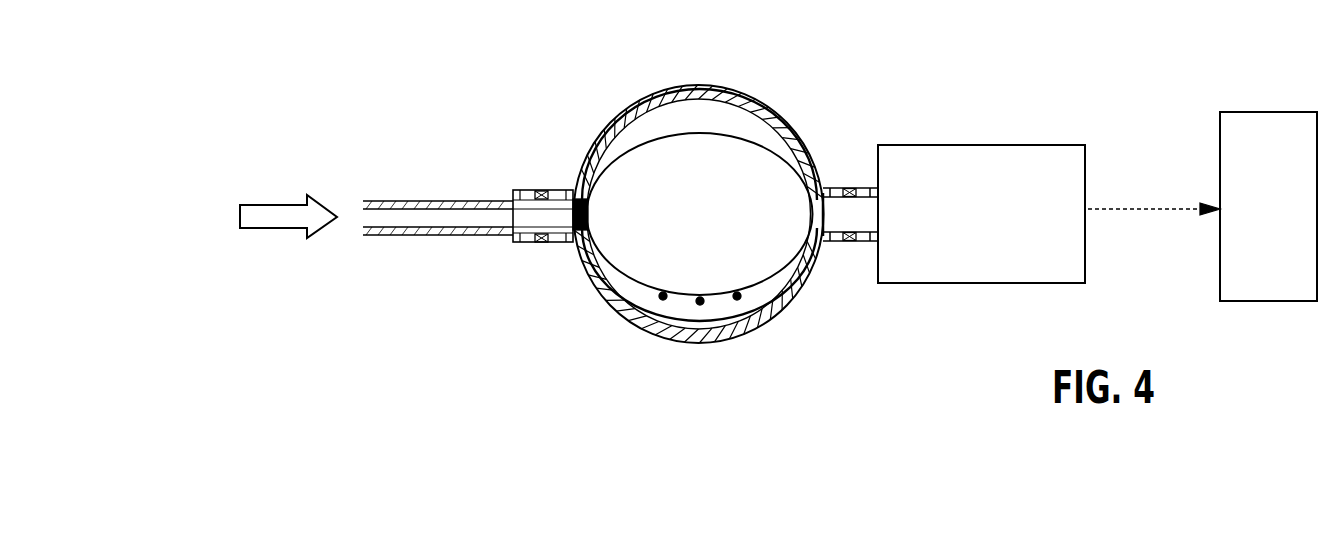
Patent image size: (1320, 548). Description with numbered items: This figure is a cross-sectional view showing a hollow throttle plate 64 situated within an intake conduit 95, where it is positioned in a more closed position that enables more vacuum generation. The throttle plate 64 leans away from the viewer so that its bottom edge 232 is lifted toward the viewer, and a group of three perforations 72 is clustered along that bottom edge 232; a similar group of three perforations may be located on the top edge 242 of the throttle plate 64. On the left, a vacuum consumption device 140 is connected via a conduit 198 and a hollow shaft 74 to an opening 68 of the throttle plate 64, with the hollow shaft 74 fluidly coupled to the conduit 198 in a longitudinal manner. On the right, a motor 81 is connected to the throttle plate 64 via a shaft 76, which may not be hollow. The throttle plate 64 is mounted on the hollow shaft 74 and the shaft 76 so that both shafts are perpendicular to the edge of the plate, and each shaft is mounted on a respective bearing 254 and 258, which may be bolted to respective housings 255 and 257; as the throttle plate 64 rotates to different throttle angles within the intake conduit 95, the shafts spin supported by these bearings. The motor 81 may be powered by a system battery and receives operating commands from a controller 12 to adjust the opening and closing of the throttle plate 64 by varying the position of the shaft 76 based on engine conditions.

The vacuum consumption device 140 is at (212, 216).
The conduit 198 is at (425, 235).
The hollow shaft 74 is at (527, 189).
The housing 255 is at (553, 190).
The bearing 254 is at (550, 243).
The opening 68 is at (574, 189).
The intake conduit 95 is at (755, 95).
The throttle plate 64 is at (709, 170).
The top edge 242 is at (702, 132).
The bottom edge 232 is at (680, 304).
The perforations 72 is at (739, 302).
The shaft 76 is at (825, 188).
The housing 257 is at (863, 187).
The bearing 258 is at (850, 243).
The motor 81 is at (1028, 226).
The controller 12 is at (1279, 216).